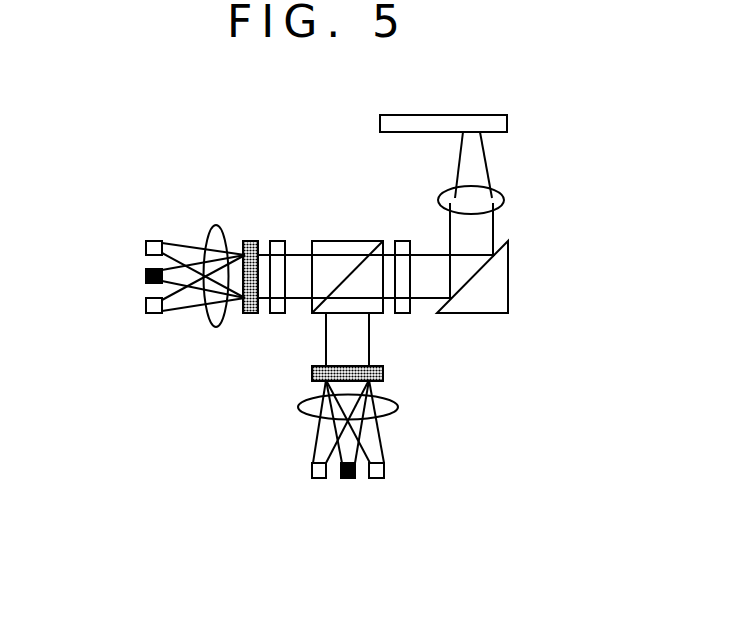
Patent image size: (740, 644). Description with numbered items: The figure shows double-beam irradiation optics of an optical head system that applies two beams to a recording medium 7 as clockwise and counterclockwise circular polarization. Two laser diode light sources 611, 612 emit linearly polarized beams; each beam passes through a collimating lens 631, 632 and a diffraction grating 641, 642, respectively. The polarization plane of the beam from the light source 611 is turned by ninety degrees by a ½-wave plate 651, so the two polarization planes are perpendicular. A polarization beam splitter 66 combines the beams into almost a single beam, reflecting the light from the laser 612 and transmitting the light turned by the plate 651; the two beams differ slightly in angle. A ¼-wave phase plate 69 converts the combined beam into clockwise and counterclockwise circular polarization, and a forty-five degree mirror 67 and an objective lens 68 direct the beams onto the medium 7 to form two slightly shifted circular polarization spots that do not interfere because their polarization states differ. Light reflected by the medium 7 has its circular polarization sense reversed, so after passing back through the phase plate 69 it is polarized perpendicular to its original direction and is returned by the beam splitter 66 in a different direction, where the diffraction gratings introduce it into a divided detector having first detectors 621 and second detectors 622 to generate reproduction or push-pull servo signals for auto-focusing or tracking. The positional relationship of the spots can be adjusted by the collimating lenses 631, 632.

The recording medium 7 is at (507, 123).
The objective lens 68 is at (505, 197).
The 45° mirror 67 is at (490, 278).
The polarization beam splitter 66 is at (348, 241).
The ¼-wave phase plate 69 is at (403, 241).
The ½-wave plate 651 is at (282, 240).
The diffraction grating 641 is at (250, 240).
The collimating lens 631 is at (217, 225).
The first detectors 621 is at (146, 247).
The laser diode light source 611 is at (146, 275).
The diffraction grating 642 is at (383, 373).
The collimating lens 632 is at (398, 407).
The second detectors 622 is at (316, 478).
The laser diode light source 612 is at (348, 478).